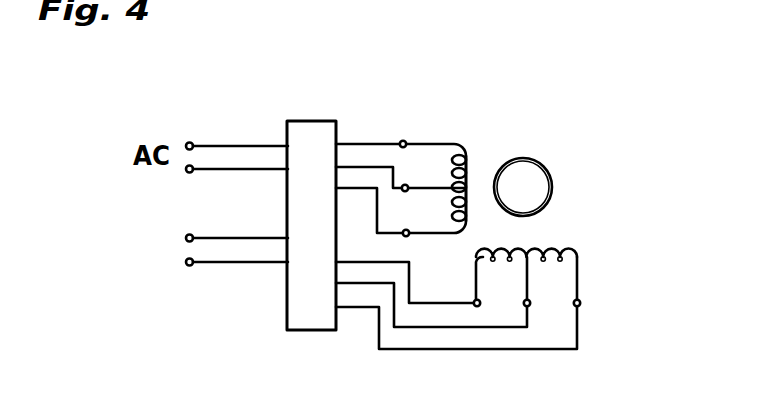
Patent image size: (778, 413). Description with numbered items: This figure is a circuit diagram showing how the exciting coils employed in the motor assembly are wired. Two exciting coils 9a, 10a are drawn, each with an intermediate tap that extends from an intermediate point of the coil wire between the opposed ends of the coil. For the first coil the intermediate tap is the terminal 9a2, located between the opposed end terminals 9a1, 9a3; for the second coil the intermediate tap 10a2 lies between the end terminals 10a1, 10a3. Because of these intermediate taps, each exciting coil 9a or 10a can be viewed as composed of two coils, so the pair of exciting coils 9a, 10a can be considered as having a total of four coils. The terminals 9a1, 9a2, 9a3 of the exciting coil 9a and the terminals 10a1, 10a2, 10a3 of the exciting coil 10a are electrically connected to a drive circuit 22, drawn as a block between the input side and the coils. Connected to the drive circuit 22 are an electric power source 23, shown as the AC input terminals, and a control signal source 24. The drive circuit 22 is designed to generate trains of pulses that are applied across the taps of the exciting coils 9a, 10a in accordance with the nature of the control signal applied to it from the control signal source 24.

The drive circuit 22 is at (315, 128).
The electric power source 23 is at (195, 146).
The control signal source 24 is at (191, 247).
The exciting coil 9a is at (467, 175).
The terminal of exciting coil 9a1 is at (403, 141).
The intermediate tap of exciting coil 9a2 is at (406, 185).
The terminal of exciting coil 9a3 is at (406, 236).
The exciting coil 10a is at (538, 208).
The terminal of exciting coil 10a1 is at (478, 306).
The intermediate tap of exciting coil 10a2 is at (529, 301).
The terminal of exciting coil 10a3 is at (579, 305).